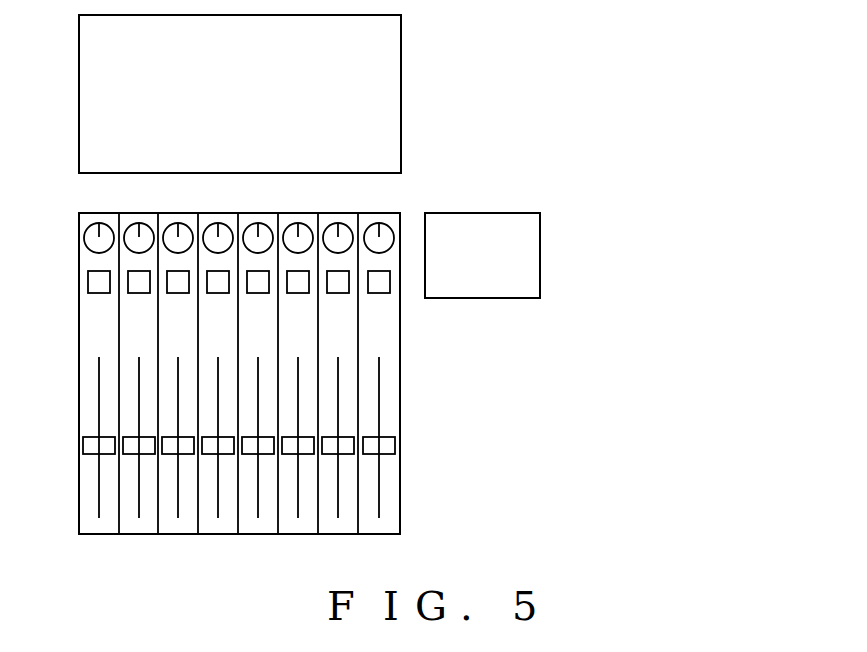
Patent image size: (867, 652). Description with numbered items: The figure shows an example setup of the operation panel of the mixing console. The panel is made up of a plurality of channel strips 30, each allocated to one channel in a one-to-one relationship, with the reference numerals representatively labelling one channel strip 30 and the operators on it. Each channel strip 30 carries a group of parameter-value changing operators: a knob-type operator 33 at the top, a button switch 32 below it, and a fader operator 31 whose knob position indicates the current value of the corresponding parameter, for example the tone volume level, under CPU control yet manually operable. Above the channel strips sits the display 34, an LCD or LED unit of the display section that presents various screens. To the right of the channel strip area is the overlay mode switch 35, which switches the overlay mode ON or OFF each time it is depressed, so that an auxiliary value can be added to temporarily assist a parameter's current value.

The channel strip 30 is at (84, 534).
The fader operator 31 is at (94, 446).
The button switch 32 is at (87, 284).
The knob-type operator 33 is at (86, 240).
The display 34 is at (401, 93).
The overlay mode switch 35 is at (482, 298).